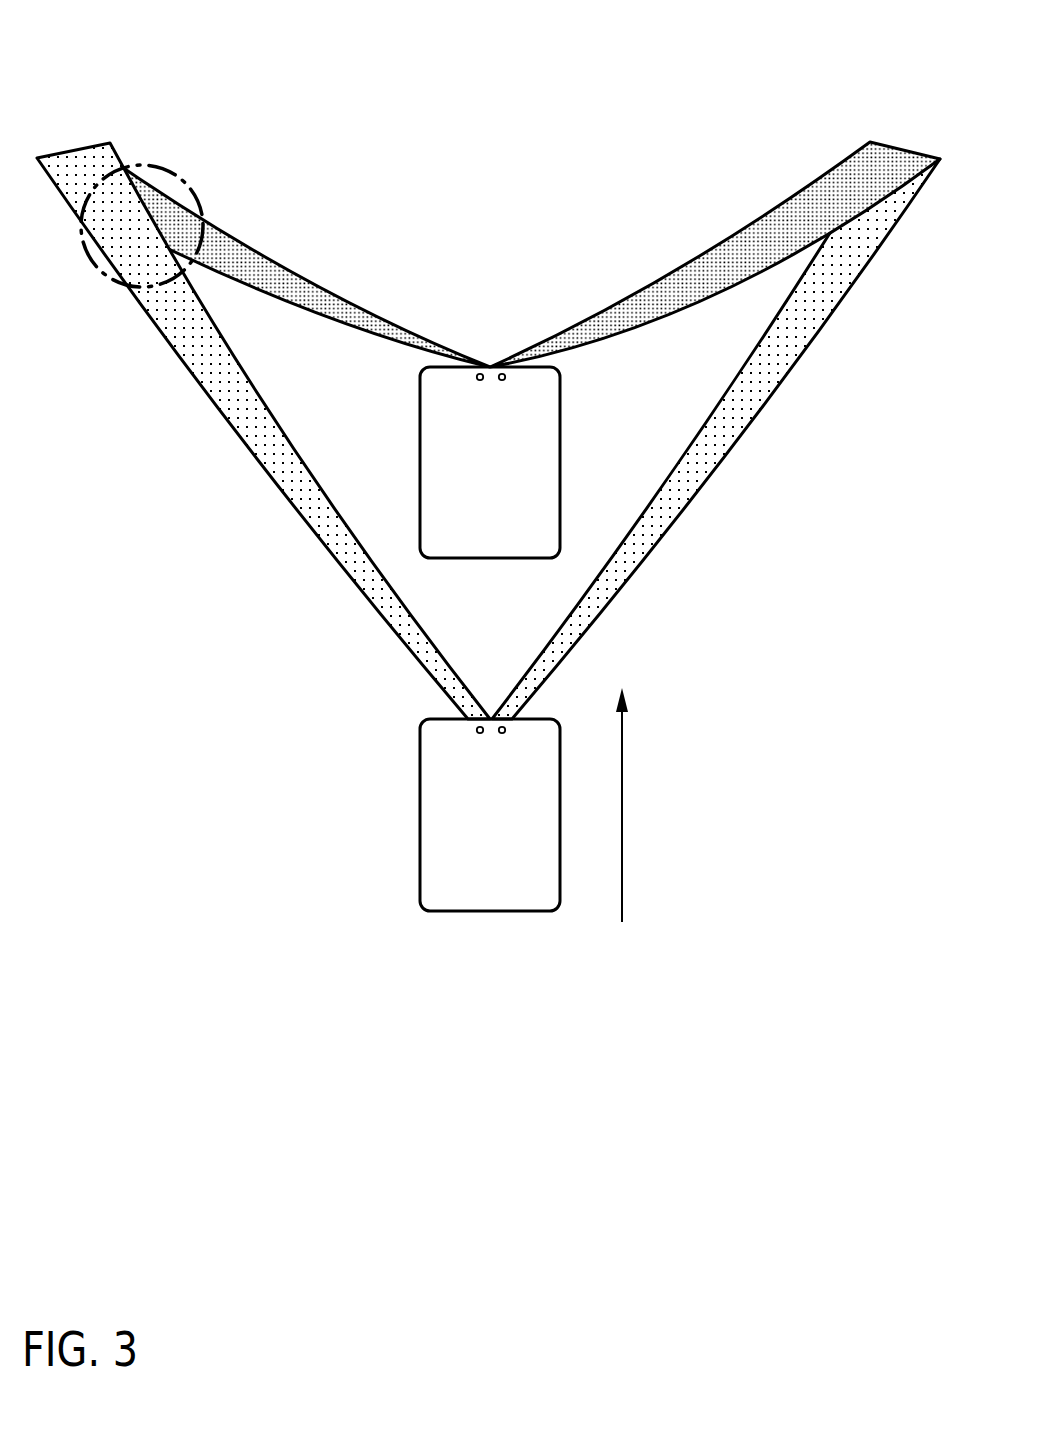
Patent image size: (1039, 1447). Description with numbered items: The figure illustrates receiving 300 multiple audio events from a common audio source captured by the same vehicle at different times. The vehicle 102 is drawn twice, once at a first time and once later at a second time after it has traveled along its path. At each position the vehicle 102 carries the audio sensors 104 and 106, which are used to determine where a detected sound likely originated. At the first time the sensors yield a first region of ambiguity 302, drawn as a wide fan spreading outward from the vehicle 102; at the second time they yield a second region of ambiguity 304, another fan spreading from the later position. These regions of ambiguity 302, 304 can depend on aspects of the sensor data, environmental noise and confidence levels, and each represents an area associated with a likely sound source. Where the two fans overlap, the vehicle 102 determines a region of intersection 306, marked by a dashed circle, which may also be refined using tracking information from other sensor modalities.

The receiving multiple audio events 300 is at (106, 42).
The vehicle 102 is at (545, 547).
The audio sensor 104 is at (480, 381).
The audio sensor 106 is at (503, 381).
The first region of ambiguity 302 is at (488, 430).
The second region of ambiguity 304 is at (386, 349).
The region of intersection 306 is at (198, 204).